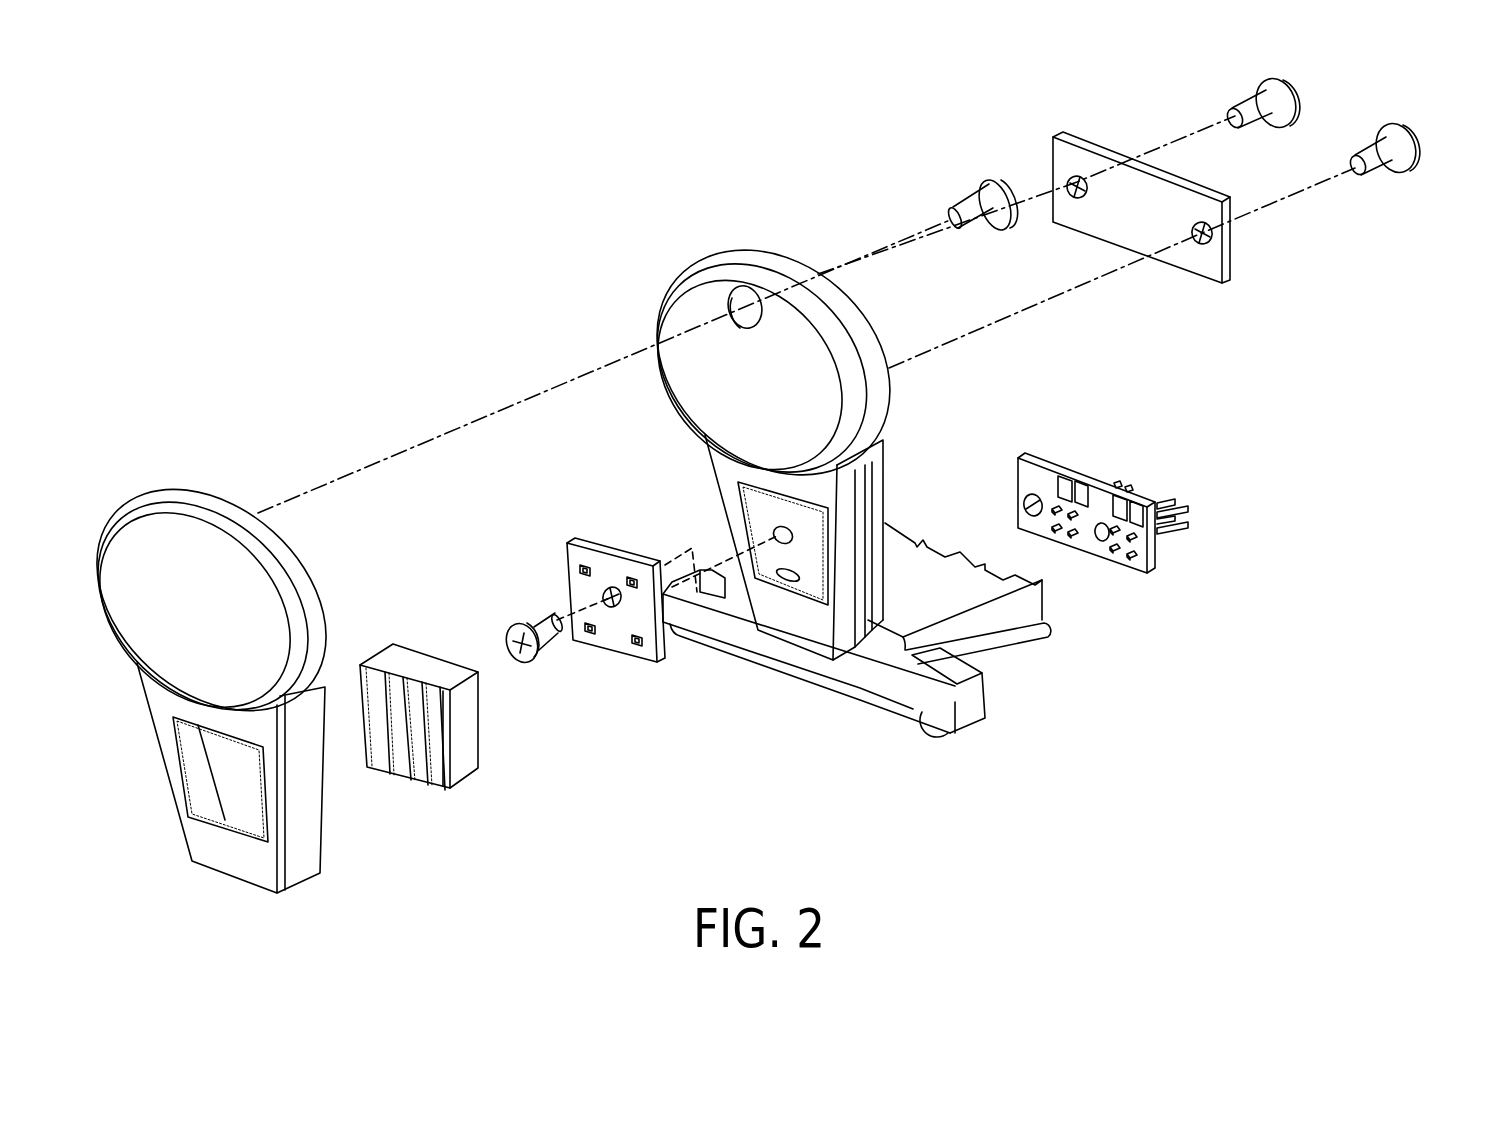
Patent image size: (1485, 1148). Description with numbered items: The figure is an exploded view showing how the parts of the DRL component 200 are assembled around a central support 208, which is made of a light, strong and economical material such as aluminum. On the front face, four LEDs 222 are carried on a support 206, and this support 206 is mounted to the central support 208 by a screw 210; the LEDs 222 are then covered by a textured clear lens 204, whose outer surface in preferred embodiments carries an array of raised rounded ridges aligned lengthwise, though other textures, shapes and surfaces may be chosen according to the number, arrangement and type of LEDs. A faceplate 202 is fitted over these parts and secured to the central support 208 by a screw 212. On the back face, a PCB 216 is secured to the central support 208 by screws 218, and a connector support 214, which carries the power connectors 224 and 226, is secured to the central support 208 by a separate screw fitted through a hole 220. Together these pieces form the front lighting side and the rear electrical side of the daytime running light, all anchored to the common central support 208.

The DRL component 200 is at (332, 268).
The faceplate 202 is at (307, 883).
The textured clear lens 204 is at (463, 778).
The support 206 is at (643, 604).
The central support 208 is at (967, 738).
The screw 210 is at (535, 621).
The screw 212 is at (972, 200).
The connector support 214 is at (1106, 534).
The PCB 216 is at (1222, 287).
The screws 218 is at (1268, 64).
The hole 220 is at (1024, 500).
The LEDs 222 is at (588, 563).
The power connector 224 is at (1140, 480).
The power connector 226 is at (1197, 499).